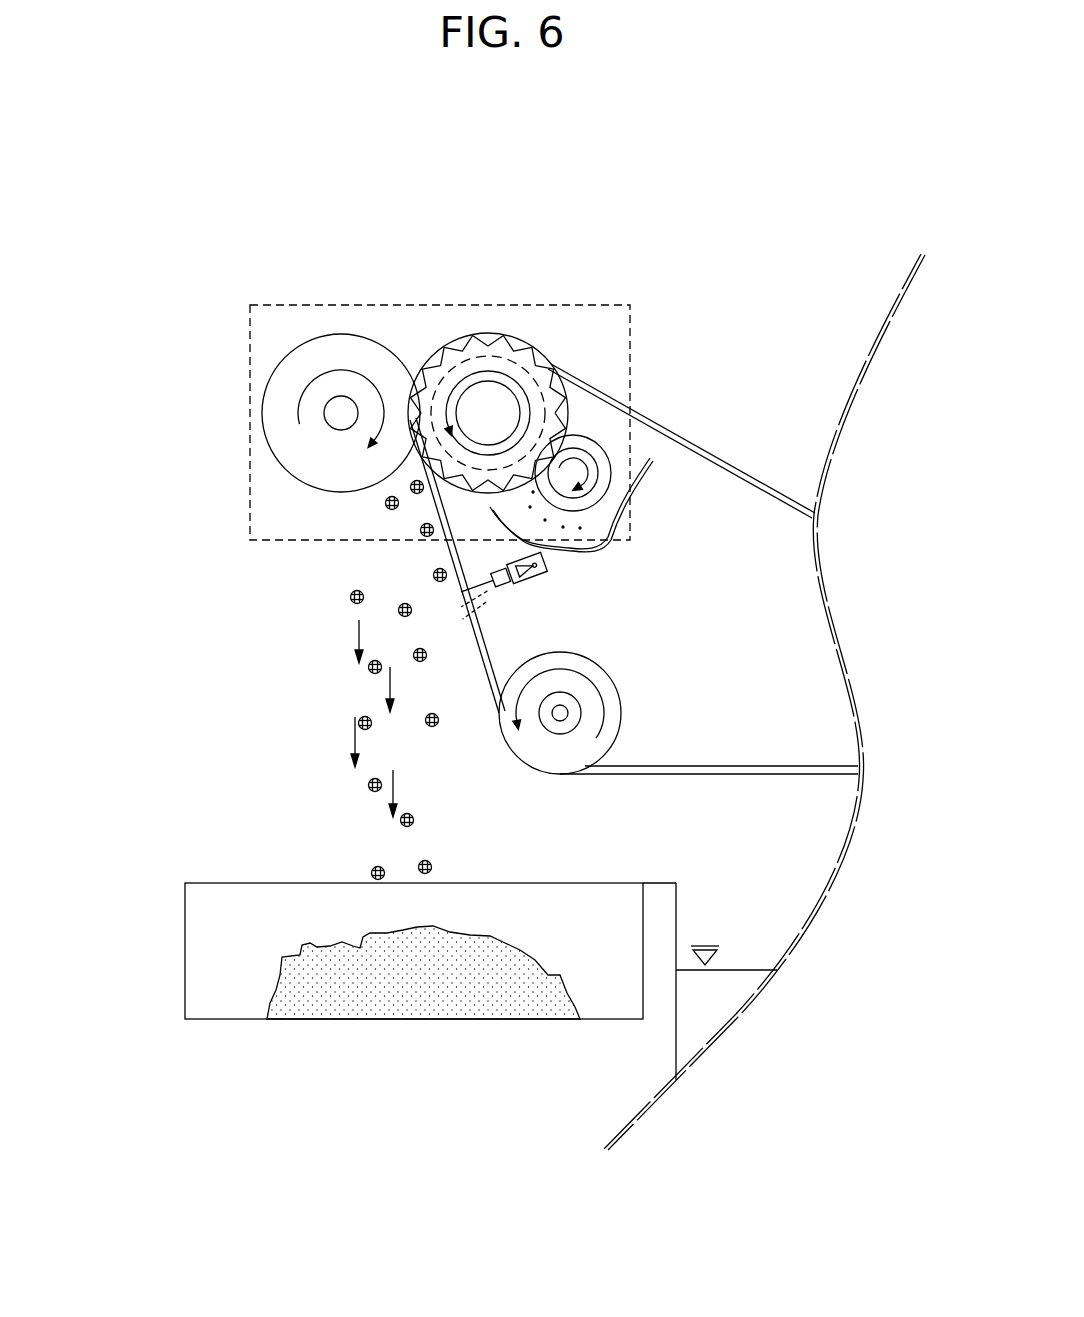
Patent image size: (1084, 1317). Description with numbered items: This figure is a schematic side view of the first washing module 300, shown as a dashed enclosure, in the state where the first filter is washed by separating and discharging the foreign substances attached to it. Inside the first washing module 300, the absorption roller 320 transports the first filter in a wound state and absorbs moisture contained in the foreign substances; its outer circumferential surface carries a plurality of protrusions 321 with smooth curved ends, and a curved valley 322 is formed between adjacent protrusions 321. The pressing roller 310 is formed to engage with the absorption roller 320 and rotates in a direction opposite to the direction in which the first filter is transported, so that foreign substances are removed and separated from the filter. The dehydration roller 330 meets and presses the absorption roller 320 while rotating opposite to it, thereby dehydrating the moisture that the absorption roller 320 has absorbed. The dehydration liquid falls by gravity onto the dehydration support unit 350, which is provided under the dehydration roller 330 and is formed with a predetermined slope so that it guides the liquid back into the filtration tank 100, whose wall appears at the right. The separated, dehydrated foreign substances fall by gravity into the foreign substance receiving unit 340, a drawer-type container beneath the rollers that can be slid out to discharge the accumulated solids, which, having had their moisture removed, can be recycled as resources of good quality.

The filtration tank 100 is at (677, 1023).
The first washing module 300 is at (250, 342).
The pressing roller 310 is at (343, 334).
The absorption roller 320 is at (493, 356).
The protrusion 321 is at (520, 347).
The valley 322 is at (448, 350).
The dehydration roller 330 is at (575, 435).
The foreign substance receiving unit 340 is at (185, 967).
The dehydration support unit 350 is at (645, 462).